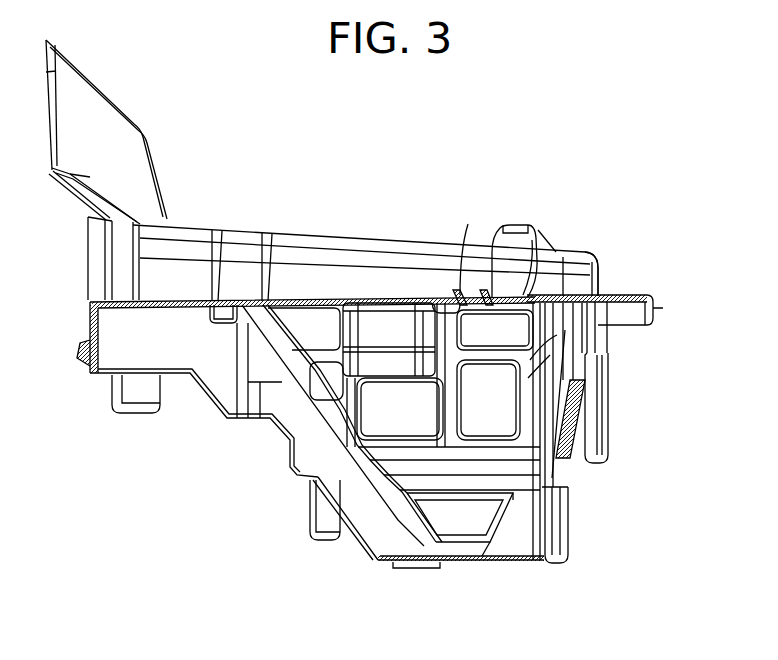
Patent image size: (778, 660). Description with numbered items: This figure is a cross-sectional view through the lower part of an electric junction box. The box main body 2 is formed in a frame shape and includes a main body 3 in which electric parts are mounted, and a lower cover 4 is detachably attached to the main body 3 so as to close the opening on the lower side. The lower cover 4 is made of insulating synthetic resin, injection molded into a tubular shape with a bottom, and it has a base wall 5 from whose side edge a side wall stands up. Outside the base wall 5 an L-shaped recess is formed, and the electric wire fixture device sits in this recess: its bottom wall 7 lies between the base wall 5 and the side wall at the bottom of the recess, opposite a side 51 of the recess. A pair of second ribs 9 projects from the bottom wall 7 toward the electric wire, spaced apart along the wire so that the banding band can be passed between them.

The box main body 2 is at (604, 263).
The main body 3 is at (608, 395).
The lower cover 4 is at (600, 279).
The base wall 5 is at (352, 237).
The side of the L-shaped recess 51 is at (403, 277).
The bottom wall 7 is at (533, 236).
The second ribs 9 is at (485, 292).